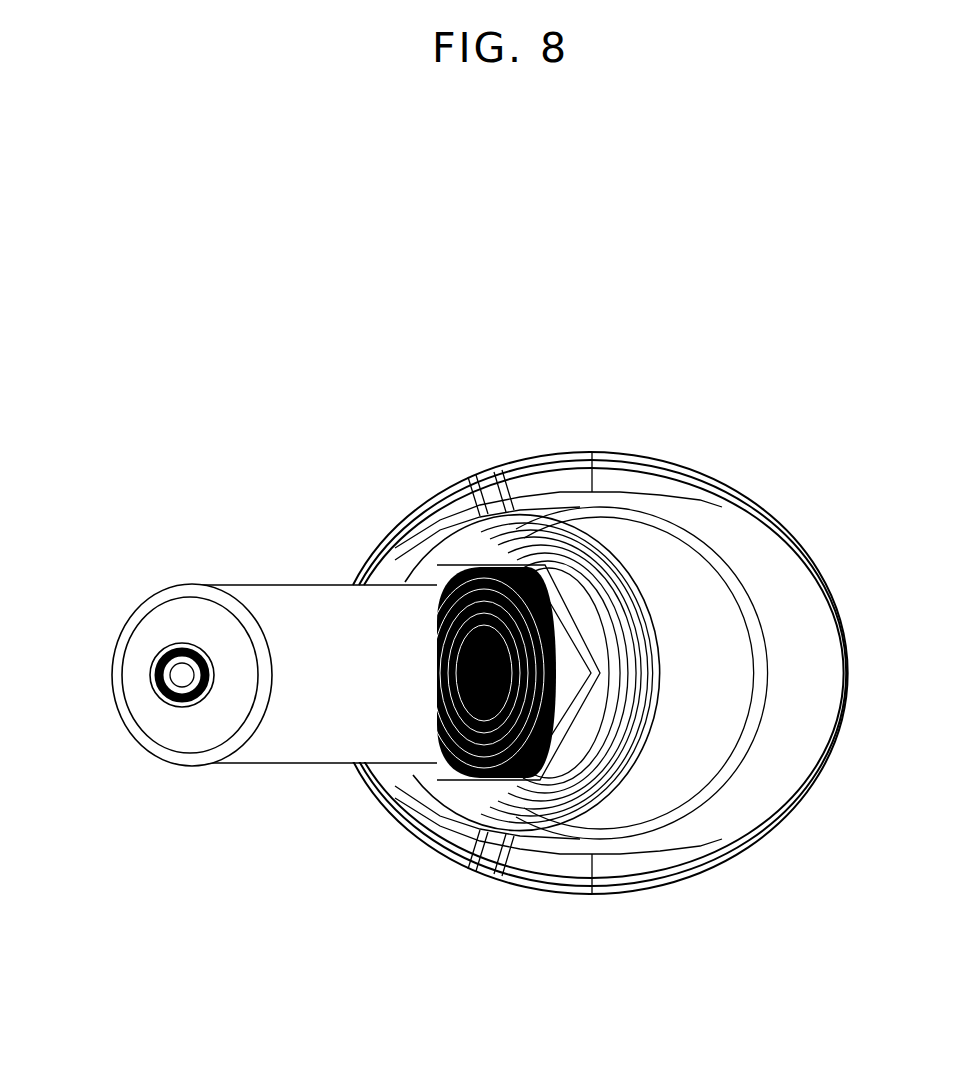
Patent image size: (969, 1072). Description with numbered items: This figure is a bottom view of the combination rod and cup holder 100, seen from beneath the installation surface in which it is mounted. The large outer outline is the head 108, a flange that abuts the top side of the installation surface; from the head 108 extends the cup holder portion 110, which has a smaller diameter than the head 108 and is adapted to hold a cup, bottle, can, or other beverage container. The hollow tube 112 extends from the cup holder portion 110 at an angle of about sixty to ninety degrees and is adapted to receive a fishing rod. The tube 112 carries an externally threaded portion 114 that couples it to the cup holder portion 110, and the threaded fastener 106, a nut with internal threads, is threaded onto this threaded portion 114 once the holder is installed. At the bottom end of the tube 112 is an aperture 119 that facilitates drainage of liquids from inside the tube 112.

The combination rod and cup holder 100 is at (258, 343).
The threaded fastener 106 is at (483, 773).
The head 108 is at (594, 453).
The cup holder portion 110 is at (825, 625).
The tube 112 is at (290, 595).
The threaded portion 114 is at (480, 660).
The aperture 119 is at (153, 677).